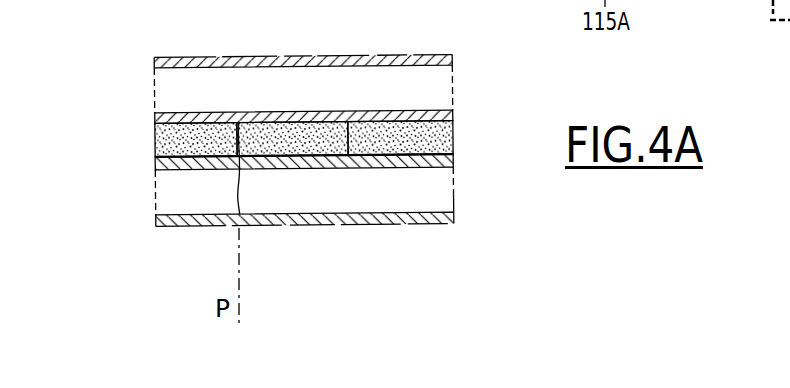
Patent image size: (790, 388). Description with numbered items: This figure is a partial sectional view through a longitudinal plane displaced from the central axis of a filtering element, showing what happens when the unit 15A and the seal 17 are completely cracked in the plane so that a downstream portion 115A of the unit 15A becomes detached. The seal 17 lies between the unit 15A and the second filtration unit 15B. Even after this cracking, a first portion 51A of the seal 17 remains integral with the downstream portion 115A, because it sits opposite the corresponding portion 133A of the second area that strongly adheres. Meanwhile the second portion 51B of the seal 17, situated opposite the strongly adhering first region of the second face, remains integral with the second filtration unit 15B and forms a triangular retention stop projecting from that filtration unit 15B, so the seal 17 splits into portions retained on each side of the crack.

The second filtration unit 15B is at (146, 93).
The seal 17 is at (160, 141).
The unit 15A is at (255, 218).
The first portion of the seal 51A is at (298, 136).
The second portion of the seal 51B is at (440, 135).
The portion of the second area that strongly adheres 133A is at (283, 172).
The downstream portion of the unit 115A is at (352, 226).